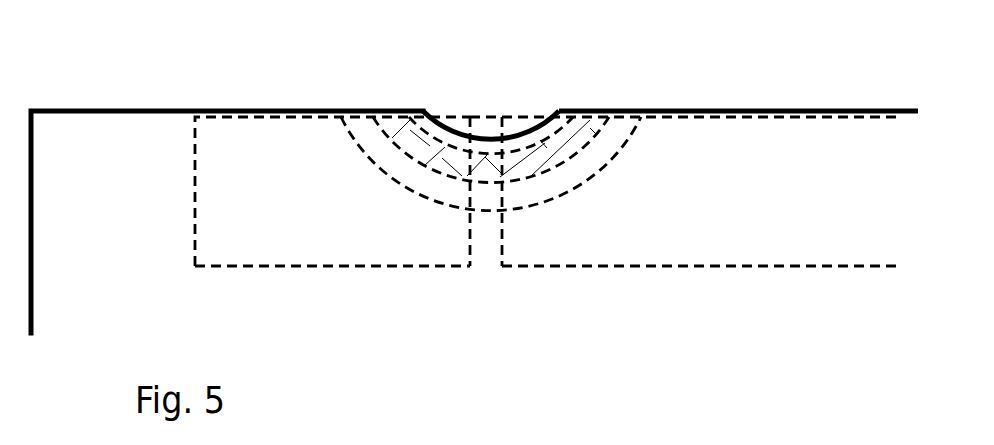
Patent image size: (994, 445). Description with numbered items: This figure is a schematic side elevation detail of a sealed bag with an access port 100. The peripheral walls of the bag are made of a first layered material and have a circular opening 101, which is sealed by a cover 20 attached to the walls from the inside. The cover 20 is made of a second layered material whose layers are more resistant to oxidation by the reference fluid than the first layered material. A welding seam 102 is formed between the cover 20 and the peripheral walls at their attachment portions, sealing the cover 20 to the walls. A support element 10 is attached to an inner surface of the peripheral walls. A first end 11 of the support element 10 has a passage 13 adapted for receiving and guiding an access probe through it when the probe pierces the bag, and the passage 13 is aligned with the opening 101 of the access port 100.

The access port 100 is at (385, 91).
The support element 10 is at (670, 232).
The first end 11 is at (267, 228).
The passage 13 is at (482, 230).
The cover 20 is at (473, 113).
The opening 101 is at (483, 130).
The welding seam 102 is at (575, 130).